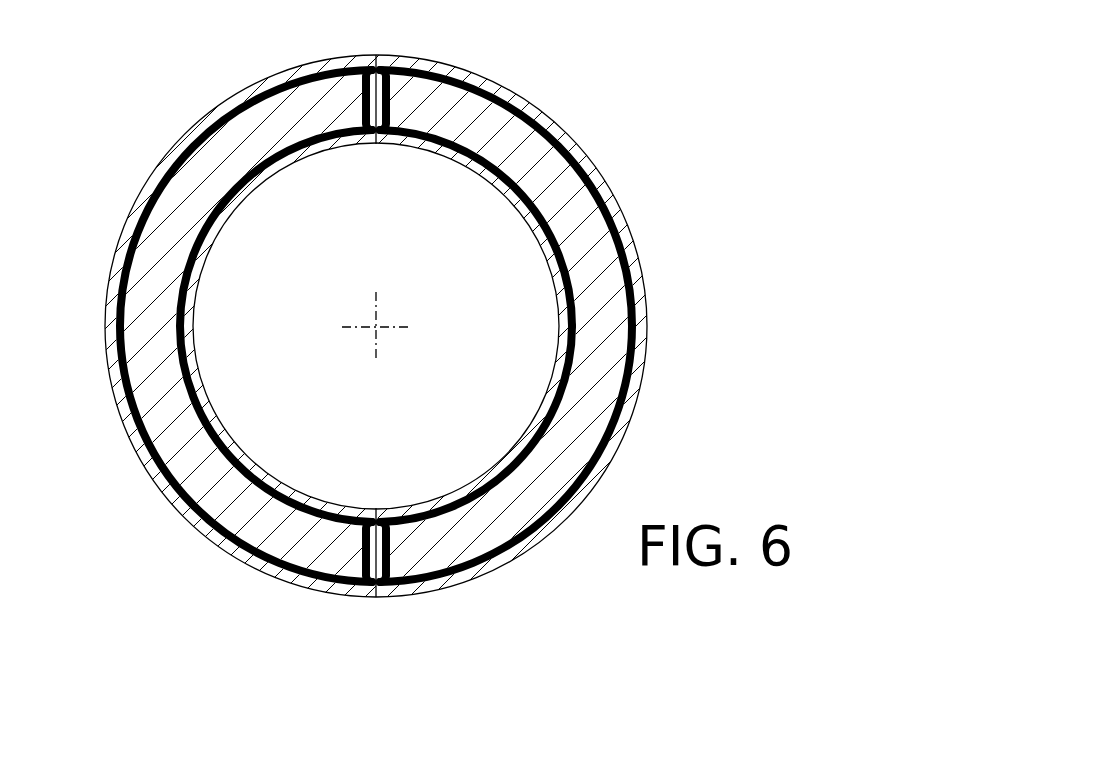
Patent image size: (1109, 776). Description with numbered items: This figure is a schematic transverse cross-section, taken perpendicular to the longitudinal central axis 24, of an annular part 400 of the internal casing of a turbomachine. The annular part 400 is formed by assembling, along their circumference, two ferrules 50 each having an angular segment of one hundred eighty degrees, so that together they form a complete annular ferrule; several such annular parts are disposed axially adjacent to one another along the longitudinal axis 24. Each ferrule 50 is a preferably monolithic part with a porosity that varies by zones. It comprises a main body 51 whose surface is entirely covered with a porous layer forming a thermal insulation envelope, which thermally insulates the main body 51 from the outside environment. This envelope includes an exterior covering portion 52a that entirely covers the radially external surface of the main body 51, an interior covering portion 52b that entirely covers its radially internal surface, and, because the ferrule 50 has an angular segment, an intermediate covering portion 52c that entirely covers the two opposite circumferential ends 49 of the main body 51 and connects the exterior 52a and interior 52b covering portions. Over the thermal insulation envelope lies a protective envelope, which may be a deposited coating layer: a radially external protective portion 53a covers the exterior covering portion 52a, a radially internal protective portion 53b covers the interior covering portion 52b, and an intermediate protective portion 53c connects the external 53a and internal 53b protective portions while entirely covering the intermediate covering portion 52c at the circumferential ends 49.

The longitudinal axis 24 is at (378, 328).
The circumferential ends 49 is at (390, 95).
The ferrule 50 is at (160, 118).
The main body 51 is at (540, 150).
The exterior covering portion 52a is at (633, 397).
The interior covering portion 52b is at (563, 385).
The intermediate covering portion 52c is at (366, 542).
The radially external protective portion 53a is at (520, 100).
The radially internal protective portion 53b is at (503, 187).
The intermediate protective portion 53c is at (377, 557).
The annular part 400 is at (838, 308).